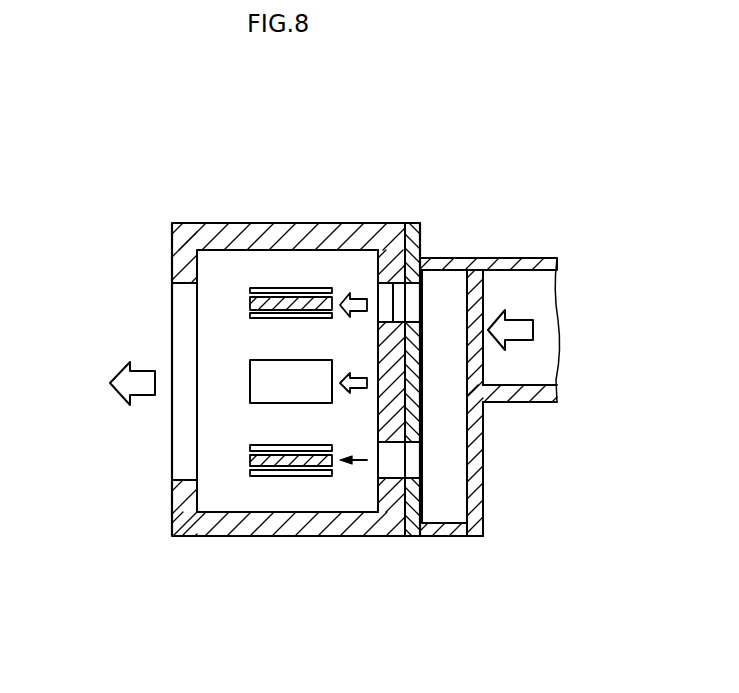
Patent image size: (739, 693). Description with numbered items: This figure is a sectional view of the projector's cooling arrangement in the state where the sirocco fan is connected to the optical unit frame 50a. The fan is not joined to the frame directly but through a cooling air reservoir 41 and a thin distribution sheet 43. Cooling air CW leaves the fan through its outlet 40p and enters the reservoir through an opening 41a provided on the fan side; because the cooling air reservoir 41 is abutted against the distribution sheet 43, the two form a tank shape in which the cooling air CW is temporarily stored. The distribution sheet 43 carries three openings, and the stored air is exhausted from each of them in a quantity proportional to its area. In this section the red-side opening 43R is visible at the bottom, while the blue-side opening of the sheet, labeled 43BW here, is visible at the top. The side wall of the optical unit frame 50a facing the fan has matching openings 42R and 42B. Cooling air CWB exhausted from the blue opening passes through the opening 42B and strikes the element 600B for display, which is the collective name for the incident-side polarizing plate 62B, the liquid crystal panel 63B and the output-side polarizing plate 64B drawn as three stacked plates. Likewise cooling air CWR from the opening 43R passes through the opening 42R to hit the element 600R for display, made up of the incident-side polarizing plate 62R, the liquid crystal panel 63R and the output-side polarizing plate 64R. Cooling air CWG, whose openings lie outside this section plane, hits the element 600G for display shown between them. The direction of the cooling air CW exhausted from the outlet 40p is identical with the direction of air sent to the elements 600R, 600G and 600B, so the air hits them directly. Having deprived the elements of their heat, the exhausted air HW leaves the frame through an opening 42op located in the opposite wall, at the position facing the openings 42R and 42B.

The optical unit frame 50a is at (280, 225).
The opening 42op is at (183, 305).
The distribution sheet 43 is at (413, 226).
The opening 42B is at (383, 293).
The blue light window of plate 43BW is at (408, 285).
The opening 42R is at (393, 473).
The opening 43R is at (413, 457).
The cooling air reservoir 41 is at (440, 266).
The opening 41a is at (472, 280).
The outlet 40p is at (525, 265).
The element for display 600B is at (187, 206).
The incident-side polarizing plate 62B is at (250, 290).
The liquid crystal panel 63B is at (250, 303).
The output-side polarizing plate 64B is at (250, 316).
The element for display 600G is at (250, 390).
The element for display 600R is at (192, 541).
The incident-side polarizing plate 62R is at (253, 474).
The liquid crystal panel 63R is at (253, 462).
The output-side polarizing plate 64R is at (253, 449).
The cooling air CWB is at (357, 292).
The cooling air CWG is at (360, 372).
The cooling air CWR is at (362, 463).
The exhausted air HW is at (143, 370).
The cooling air CW is at (533, 330).